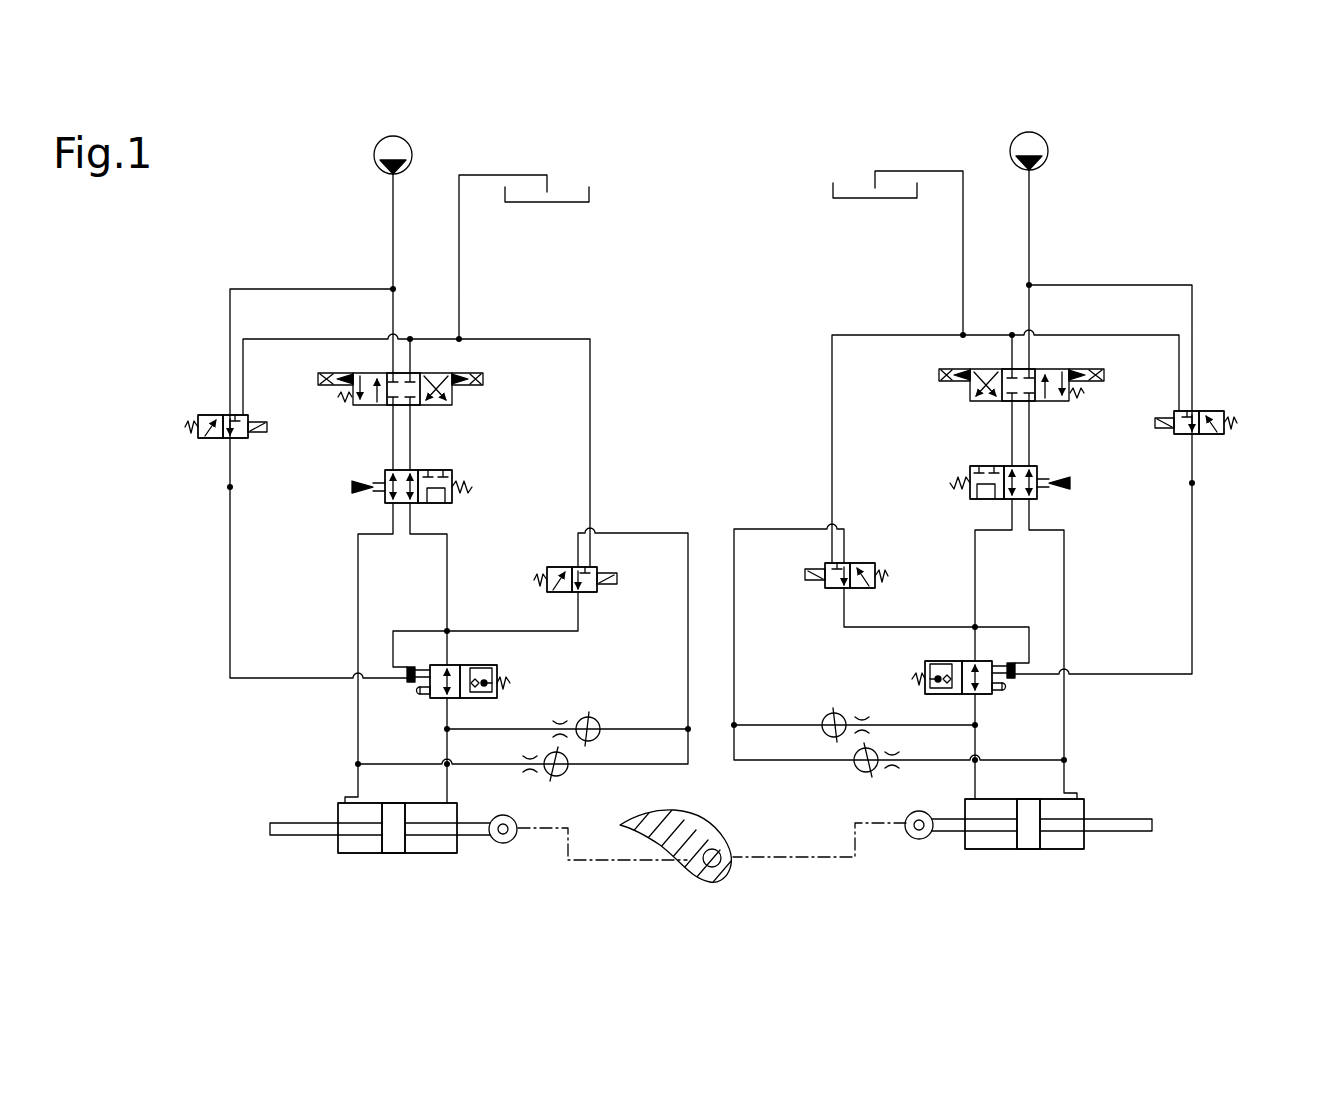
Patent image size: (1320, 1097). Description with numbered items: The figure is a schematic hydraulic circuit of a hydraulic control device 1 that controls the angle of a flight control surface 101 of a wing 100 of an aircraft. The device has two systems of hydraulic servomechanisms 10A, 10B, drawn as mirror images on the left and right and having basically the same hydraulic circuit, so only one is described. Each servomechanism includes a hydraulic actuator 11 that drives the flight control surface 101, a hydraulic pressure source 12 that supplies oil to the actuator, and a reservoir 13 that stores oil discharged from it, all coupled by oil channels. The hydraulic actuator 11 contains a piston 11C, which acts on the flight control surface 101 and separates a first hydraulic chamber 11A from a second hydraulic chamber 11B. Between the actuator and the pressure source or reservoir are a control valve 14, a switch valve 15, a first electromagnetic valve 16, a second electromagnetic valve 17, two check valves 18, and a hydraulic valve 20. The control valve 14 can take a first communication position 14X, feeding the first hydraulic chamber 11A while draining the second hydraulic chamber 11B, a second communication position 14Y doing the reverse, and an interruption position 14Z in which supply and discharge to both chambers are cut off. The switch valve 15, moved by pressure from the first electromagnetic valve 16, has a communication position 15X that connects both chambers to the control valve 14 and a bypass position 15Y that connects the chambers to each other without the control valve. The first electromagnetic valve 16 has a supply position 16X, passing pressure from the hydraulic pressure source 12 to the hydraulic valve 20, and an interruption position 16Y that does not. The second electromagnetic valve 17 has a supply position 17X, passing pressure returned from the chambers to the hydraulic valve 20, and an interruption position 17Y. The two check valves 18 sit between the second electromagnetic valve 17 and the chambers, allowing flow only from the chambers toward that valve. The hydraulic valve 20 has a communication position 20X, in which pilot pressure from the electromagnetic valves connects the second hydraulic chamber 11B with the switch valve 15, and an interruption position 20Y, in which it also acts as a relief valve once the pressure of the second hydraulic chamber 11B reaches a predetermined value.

The hydraulic control device 1 is at (714, 534).
The hydraulic servomechanism 10A is at (199, 246).
The hydraulic servomechanism 10B is at (732, 183).
The hydraulic actuator 11 is at (711, 848).
The first hydraulic chamber 11A is at (352, 854).
The second hydraulic chamber 11B is at (420, 854).
The piston 11C is at (393, 854).
The hydraulic pressure source 12 is at (374, 155).
The reservoir 13 is at (589, 192).
The control valve 14 is at (694, 412).
The first communication position 14X is at (363, 406).
The second communication position 14Y is at (470, 390).
The interruption position 14Z is at (413, 406).
The switch valve 15 is at (713, 511).
The communication position 15X is at (383, 503).
The bypass position 15Y is at (447, 504).
The first electromagnetic valve 16 is at (714, 414).
The supply position 16X is at (237, 440).
The interruption position 16Y is at (213, 440).
The second electromagnetic valve 17 is at (713, 570).
The supply position 17X is at (588, 593).
The interruption position 17Y is at (560, 593).
The check valve 18 is at (570, 755).
The hydraulic valve 20 is at (713, 698).
The communication position 20X is at (436, 700).
The interruption position 20Y is at (487, 700).
The wing 100 is at (673, 867).
The flight control surface 101 is at (715, 825).